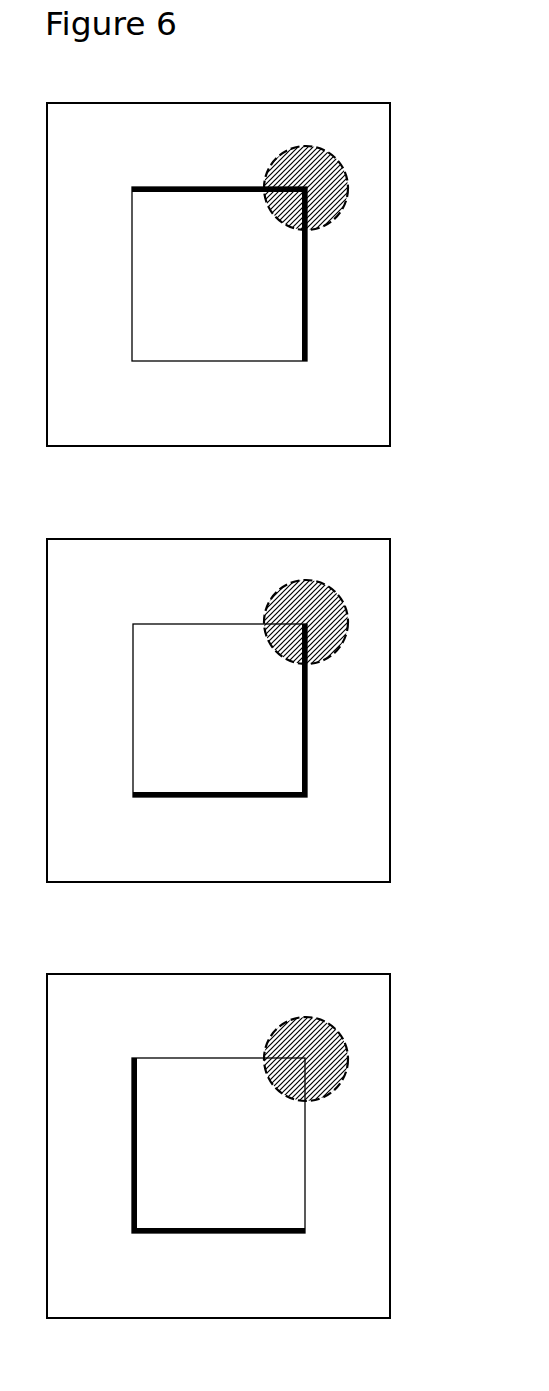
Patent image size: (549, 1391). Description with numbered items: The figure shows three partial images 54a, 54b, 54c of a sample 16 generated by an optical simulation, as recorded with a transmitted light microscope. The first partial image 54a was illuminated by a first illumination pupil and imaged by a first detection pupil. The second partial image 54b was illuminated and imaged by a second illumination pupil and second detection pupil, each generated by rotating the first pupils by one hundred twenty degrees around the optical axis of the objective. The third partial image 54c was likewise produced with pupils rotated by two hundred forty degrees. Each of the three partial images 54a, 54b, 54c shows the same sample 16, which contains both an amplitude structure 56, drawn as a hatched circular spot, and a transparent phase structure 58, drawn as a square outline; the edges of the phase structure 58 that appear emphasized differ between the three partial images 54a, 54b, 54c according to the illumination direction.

The sample 16 is at (347, 242).
The first partial image 54a is at (390, 272).
The second partial image 54b is at (390, 706).
The third partial image 54c is at (390, 1142).
The amplitude structure 56 is at (305, 146).
The transparent phase structure 58 is at (309, 331).